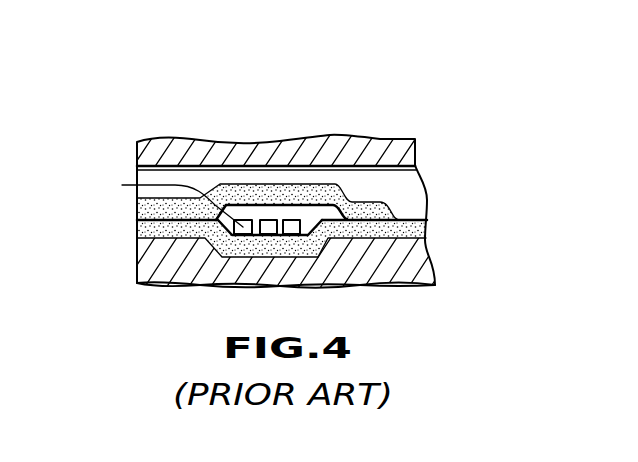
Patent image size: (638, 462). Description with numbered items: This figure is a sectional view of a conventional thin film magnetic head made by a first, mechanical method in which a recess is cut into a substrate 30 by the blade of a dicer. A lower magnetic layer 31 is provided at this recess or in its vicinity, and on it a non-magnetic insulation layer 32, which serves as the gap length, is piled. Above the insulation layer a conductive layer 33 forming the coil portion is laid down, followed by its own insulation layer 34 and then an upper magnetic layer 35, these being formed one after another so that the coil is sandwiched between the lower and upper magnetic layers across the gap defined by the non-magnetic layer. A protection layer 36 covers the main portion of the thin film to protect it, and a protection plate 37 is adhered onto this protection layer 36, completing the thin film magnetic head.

The substrate 30 is at (430, 270).
The lower magnetic layer 31 is at (418, 228).
The non-magnetic insulation layer 32 is at (137, 223).
The conductive layer 33 is at (168, 200).
The insulation layer 34 is at (302, 217).
The upper magnetic layer 35 is at (393, 213).
The protection layer 36 is at (410, 185).
The protection plate 37 is at (405, 152).